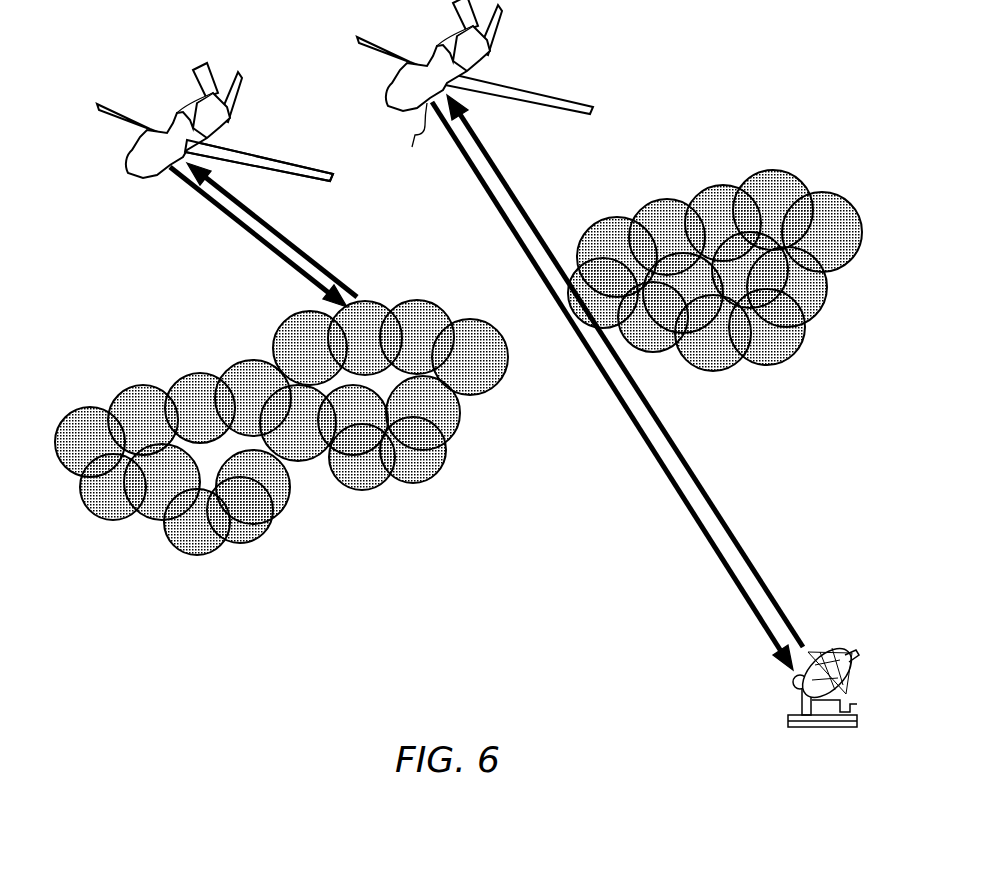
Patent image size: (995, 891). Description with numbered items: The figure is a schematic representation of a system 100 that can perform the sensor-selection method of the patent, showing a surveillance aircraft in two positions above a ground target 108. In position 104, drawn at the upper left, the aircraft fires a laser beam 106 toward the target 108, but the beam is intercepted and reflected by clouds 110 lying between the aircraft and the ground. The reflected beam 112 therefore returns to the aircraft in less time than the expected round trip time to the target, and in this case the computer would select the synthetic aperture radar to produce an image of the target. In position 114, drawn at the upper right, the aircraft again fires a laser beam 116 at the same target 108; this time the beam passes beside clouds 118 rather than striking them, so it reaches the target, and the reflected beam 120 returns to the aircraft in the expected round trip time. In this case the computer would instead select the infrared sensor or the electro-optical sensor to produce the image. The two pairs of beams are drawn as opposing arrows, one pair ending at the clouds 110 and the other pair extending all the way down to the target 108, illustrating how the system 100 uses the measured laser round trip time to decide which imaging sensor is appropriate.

The system 100 is at (545, 480).
The position 104 is at (227, 140).
The laser beam 106 is at (258, 246).
The target 108 is at (790, 710).
The clouds 110 is at (365, 473).
The reflected beam 112 is at (300, 250).
The position 114 is at (412, 141).
The laser beam 116 is at (683, 505).
The clouds 118 is at (773, 347).
The reflected beam 120 is at (697, 477).